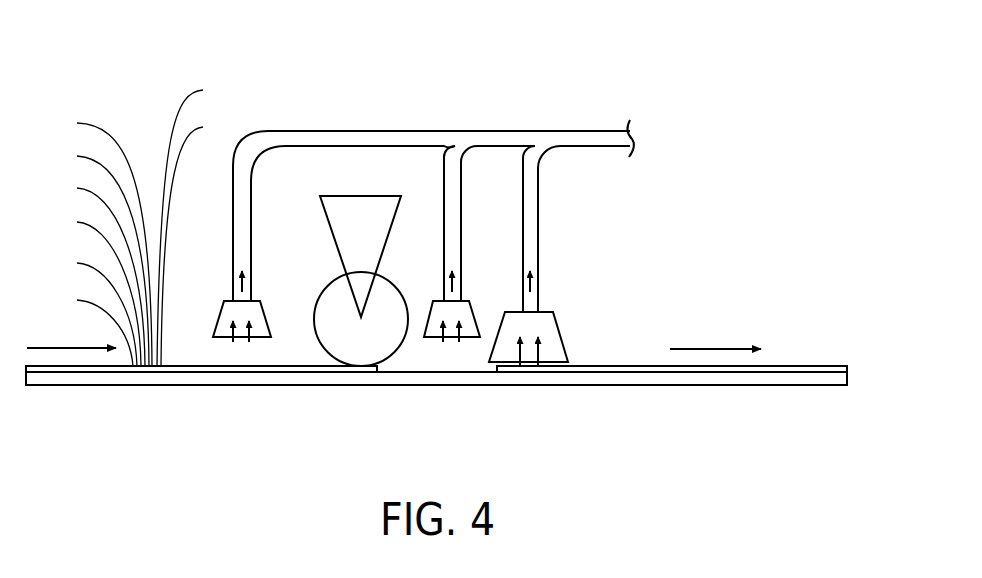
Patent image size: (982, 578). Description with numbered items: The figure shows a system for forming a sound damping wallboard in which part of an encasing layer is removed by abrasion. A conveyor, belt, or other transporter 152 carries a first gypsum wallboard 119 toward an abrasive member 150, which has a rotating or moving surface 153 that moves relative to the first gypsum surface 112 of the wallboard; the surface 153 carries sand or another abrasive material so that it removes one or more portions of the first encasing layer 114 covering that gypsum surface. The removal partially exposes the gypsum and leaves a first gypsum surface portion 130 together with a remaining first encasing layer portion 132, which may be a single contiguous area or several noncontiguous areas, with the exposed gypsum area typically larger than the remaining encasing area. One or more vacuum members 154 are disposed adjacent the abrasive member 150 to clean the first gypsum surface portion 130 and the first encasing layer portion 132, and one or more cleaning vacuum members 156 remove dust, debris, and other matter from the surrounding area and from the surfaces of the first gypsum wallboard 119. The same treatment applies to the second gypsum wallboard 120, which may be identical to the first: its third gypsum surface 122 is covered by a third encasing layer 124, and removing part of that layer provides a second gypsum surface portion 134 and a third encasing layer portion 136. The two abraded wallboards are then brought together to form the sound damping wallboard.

The first gypsum surface 112 is at (200, 241).
The first gypsum surface portion 130 is at (198, 223).
The third gypsum surface 122 is at (92, 239).
The third encasing layer 124 is at (91, 256).
The first encasing layer 114 is at (89, 272).
The third encasing layer portion 136 is at (87, 289).
The first encasing layer portion 132 is at (85, 309).
The second gypsum surface portion 134 is at (83, 328).
The first gypsum wallboard 119 is at (148, 367).
The second gypsum wallboard 120 is at (212, 367).
The transporter 152 is at (310, 386).
The abrasive member 150 is at (340, 300).
The rotating or moving surface 153 is at (403, 292).
The vacuum member 154 is at (260, 322).
The cleaning vacuum member 156 is at (562, 330).